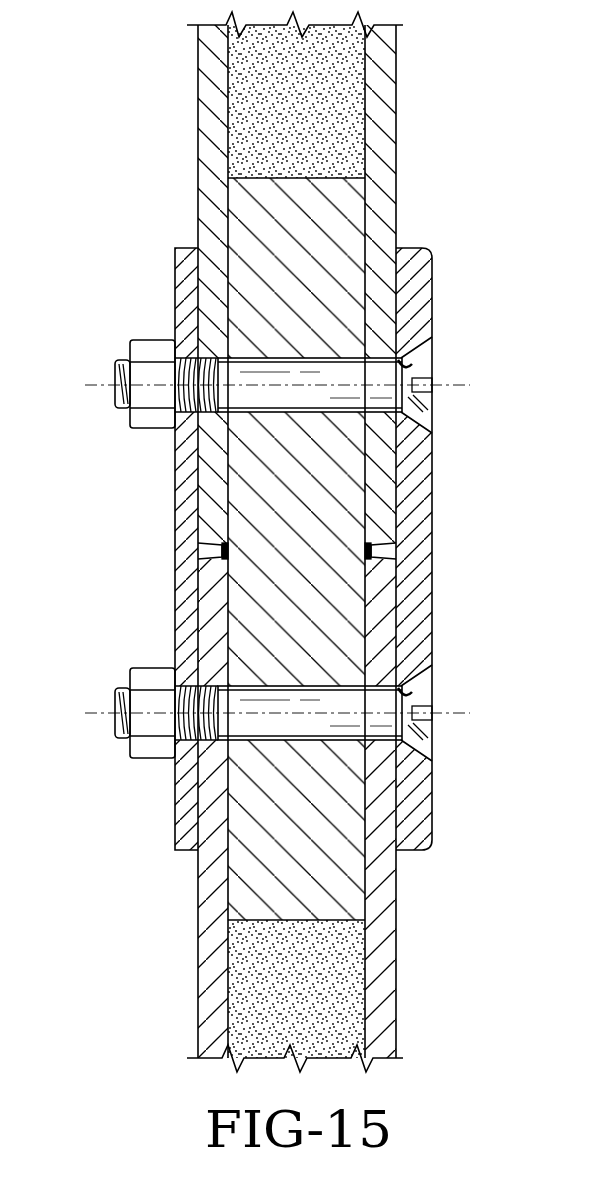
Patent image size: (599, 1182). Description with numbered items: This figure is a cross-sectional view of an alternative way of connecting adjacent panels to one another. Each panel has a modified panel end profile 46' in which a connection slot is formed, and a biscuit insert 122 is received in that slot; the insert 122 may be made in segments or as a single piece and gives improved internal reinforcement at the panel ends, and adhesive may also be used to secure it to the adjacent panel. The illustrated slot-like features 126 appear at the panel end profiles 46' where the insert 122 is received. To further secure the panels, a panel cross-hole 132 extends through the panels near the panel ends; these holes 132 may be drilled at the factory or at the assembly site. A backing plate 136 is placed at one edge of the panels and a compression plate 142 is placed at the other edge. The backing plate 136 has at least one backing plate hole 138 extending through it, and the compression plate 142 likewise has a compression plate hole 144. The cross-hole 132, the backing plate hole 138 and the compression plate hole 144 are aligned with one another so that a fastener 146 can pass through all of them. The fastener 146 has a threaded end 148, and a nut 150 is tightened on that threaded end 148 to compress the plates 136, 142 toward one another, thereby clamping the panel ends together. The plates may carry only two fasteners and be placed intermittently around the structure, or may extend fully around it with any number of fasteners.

The biscuit insert 122 is at (325, 436).
The slot 126 is at (200, 544).
The panel end profile 46' is at (296, 568).
The panel cross-hole 132 is at (196, 356).
The backing plate 136 is at (183, 280).
The backing plate hole 138 is at (175, 690).
The compression plate 142 is at (424, 282).
The compression plate hole 144 is at (405, 366).
The fastener 146 is at (423, 402).
The threaded end 148 is at (120, 368).
The nut 150 is at (145, 418).